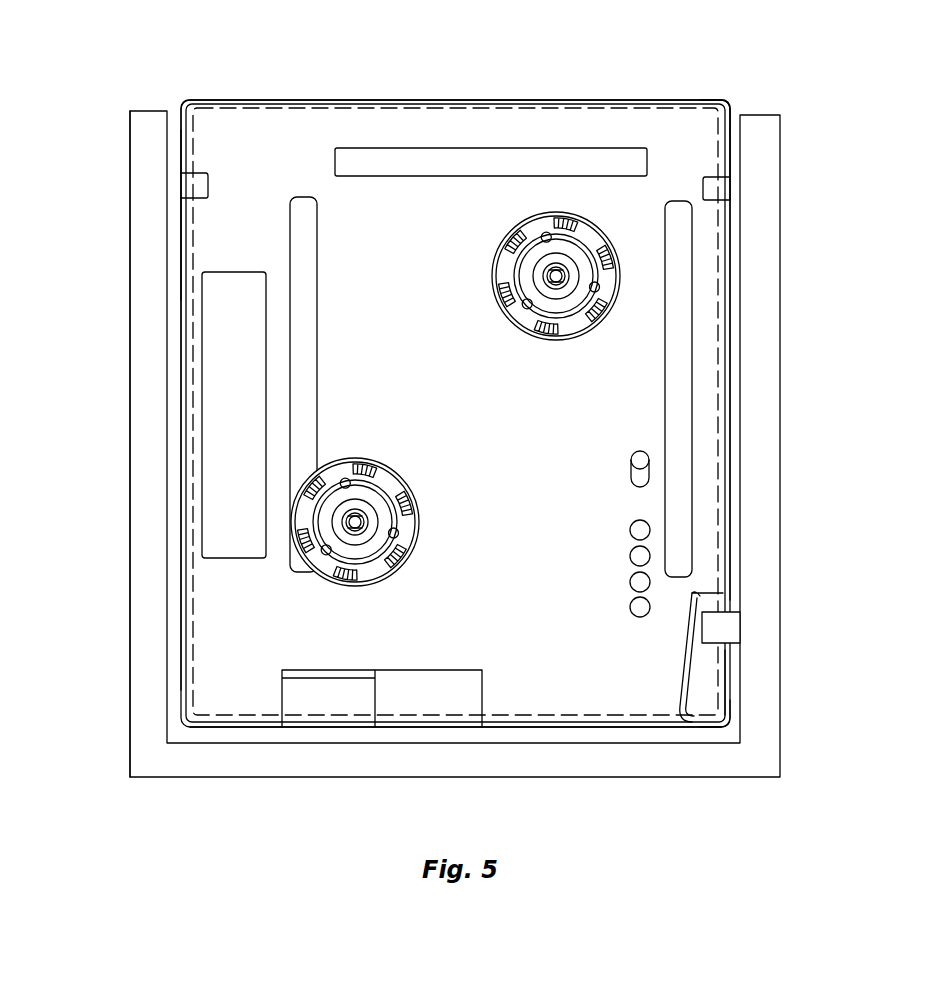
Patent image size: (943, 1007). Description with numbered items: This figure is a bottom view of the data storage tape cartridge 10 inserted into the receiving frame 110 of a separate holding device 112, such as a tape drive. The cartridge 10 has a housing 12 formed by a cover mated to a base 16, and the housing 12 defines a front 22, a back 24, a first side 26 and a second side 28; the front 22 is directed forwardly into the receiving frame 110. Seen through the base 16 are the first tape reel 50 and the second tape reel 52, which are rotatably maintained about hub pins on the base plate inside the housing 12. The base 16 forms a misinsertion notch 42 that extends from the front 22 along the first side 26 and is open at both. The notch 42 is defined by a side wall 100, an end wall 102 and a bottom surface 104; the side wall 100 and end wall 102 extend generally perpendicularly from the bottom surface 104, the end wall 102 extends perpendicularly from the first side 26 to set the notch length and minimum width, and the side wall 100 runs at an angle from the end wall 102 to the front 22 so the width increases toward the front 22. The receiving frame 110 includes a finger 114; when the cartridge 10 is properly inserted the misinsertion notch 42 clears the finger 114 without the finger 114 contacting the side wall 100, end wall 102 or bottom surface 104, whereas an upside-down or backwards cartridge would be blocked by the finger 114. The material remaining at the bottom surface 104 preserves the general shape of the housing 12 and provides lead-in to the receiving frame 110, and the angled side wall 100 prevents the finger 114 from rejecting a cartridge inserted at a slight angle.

The data storage tape cartridge 10 is at (417, 98).
The housing 12 is at (289, 98).
The base 16 is at (680, 108).
The front 22 is at (565, 735).
The back 24 is at (539, 101).
The first side 26 is at (732, 430).
The second side 28 is at (180, 252).
The misinsertion notch 42 is at (705, 719).
The first tape reel 50 is at (572, 322).
The second tape reel 52 is at (397, 533).
The side wall 100 is at (685, 700).
The end wall 102 is at (705, 598).
The bottom surface 104 is at (718, 675).
The receiving frame 110 is at (130, 405).
The holding device 112 is at (128, 566).
The finger 114 is at (732, 632).